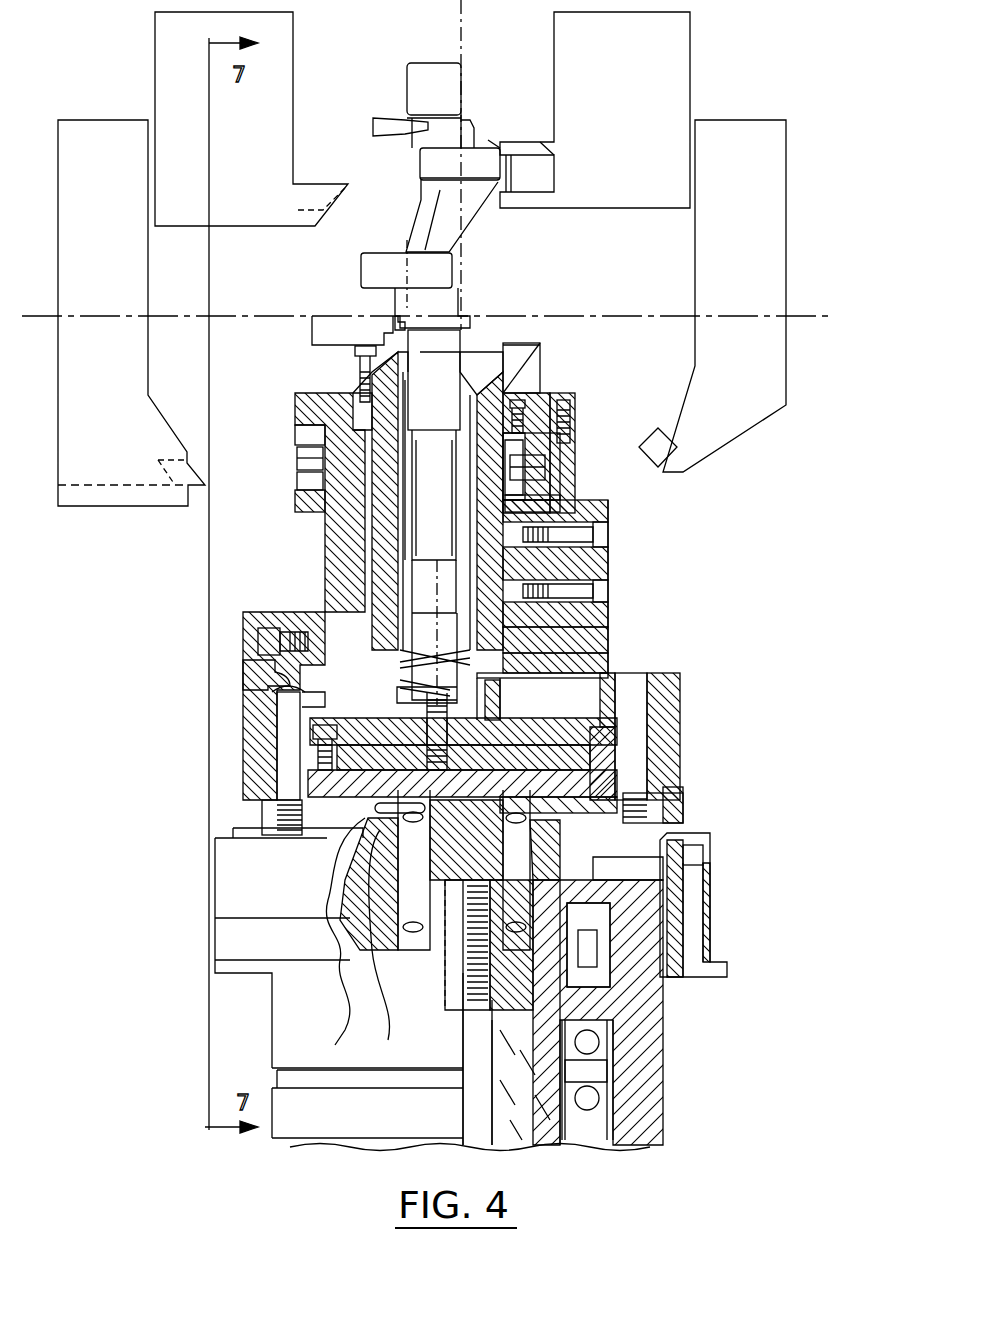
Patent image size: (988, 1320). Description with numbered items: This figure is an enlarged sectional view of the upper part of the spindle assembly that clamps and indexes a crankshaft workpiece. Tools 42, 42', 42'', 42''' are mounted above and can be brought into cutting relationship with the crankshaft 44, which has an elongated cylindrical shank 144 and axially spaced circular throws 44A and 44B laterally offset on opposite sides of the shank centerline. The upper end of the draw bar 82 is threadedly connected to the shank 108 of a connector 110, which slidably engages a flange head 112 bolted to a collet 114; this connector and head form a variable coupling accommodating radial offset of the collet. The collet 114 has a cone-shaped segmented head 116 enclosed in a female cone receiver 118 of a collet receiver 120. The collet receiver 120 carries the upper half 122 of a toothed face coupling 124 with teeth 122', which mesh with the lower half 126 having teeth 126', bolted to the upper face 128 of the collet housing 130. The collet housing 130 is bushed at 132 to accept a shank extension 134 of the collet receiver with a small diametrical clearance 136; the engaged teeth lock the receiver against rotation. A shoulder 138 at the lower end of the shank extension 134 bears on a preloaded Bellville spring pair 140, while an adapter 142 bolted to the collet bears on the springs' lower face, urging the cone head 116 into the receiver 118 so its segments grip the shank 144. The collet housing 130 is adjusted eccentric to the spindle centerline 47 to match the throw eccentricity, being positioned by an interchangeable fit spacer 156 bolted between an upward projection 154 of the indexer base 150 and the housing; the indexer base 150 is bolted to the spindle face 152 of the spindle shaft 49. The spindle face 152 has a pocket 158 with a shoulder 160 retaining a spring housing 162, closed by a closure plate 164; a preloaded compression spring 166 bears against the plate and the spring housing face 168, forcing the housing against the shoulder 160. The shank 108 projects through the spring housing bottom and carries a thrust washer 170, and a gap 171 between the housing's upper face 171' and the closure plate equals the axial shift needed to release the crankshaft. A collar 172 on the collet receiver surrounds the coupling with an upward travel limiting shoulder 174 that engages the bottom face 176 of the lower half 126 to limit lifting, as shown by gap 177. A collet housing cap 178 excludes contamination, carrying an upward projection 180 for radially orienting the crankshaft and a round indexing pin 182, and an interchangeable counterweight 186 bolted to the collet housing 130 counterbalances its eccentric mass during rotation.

The tool 42 is at (131, 313).
The tool 42' is at (264, 119).
The tool 42'' is at (636, 110).
The tool 42''' is at (746, 296).
The crankshaft 44 is at (452, 272).
The circular throw 44A is at (478, 162).
The circular throw 44B is at (377, 262).
The centerline of spindle 47 is at (462, 240).
The spindle shaft 49 is at (230, 887).
The draw bar 82 is at (485, 1050).
The shank of connector 108 is at (452, 867).
The connector 110 is at (648, 778).
The flange head 112 is at (577, 722).
The collet 114 is at (553, 360).
The cone-shaped segmented head 116 is at (512, 362).
The female cone receiver 118 is at (385, 404).
The collet receiver 120 is at (527, 393).
The upper half of toothed face coupling 122 is at (646, 446).
The teeth 122' is at (598, 423).
The toothed face coupling 124 is at (332, 428).
The lower half of face coupling 126 is at (622, 466).
The teeth 126' is at (576, 465).
The upper face of collet housing 128 is at (505, 507).
The collet housing 130 is at (540, 557).
The bushing 132 is at (500, 585).
The shank extension 134 is at (535, 513).
The diametrical clearance 136 is at (500, 630).
The shoulder 138 is at (497, 656).
The Bellville spring pair 140 is at (548, 660).
The adapter 142 is at (488, 702).
The shank 144 is at (447, 378).
The indexer base 150 is at (250, 718).
The spindle face 152 is at (667, 800).
The upward projection 154 is at (252, 666).
The interchangeable fit spacer 156 is at (280, 612).
The pocket 158 is at (337, 862).
The shoulder 160 is at (557, 987).
The spring housing 162 is at (570, 880).
The closure plate 164 is at (607, 798).
The compression spring 166 is at (505, 815).
The spring housing face 168 is at (357, 953).
The thrust washer 170 is at (413, 947).
The gap 171 is at (542, 792).
The upper face of spring housing 171' is at (216, 760).
The collar 172 is at (323, 458).
The upward travel limiting shoulder 174 is at (317, 475).
The bottom face 176 is at (323, 467).
The gap 177 is at (318, 483).
The collet housing cap 178 is at (515, 355).
The upward projection 180 is at (395, 320).
The indexing pin 182 is at (308, 333).
The counterweight 186 is at (700, 566).